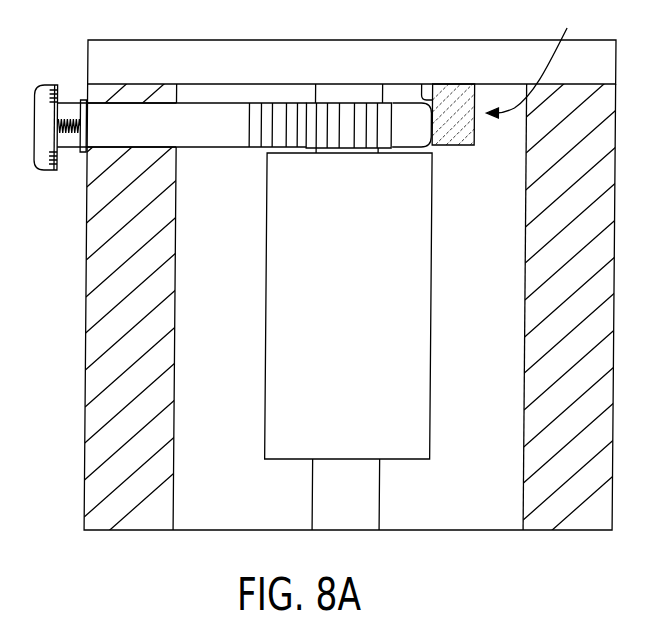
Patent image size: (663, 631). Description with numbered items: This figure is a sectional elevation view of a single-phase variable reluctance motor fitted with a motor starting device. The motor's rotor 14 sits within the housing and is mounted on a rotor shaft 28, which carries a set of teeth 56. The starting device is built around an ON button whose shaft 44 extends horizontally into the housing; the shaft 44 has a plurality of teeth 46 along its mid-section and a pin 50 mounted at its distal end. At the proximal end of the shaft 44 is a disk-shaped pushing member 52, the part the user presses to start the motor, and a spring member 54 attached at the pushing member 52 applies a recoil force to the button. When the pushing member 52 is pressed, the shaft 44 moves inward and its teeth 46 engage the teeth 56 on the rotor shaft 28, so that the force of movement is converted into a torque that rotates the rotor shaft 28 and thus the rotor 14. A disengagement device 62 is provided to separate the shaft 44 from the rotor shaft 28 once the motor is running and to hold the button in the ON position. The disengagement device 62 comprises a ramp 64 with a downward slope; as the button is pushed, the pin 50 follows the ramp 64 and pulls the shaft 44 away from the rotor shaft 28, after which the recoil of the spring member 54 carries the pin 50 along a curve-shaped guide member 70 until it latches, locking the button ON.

The rotor 14 is at (366, 318).
The rotor shaft 28 is at (358, 90).
The shaft 44 is at (187, 123).
The teeth 46 is at (296, 120).
The pin 50 is at (410, 106).
The disk-shaped pushing member 52 is at (45, 88).
The spring member 54 is at (72, 125).
The teeth 56 is at (343, 118).
The disengagement device 62 is at (535, 59).
The ramp 64 is at (432, 92).
The curve-shaped guide member 70 is at (468, 97).